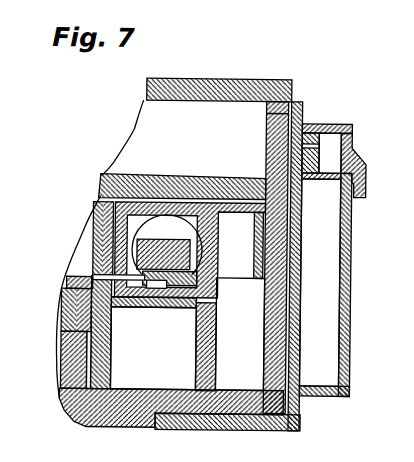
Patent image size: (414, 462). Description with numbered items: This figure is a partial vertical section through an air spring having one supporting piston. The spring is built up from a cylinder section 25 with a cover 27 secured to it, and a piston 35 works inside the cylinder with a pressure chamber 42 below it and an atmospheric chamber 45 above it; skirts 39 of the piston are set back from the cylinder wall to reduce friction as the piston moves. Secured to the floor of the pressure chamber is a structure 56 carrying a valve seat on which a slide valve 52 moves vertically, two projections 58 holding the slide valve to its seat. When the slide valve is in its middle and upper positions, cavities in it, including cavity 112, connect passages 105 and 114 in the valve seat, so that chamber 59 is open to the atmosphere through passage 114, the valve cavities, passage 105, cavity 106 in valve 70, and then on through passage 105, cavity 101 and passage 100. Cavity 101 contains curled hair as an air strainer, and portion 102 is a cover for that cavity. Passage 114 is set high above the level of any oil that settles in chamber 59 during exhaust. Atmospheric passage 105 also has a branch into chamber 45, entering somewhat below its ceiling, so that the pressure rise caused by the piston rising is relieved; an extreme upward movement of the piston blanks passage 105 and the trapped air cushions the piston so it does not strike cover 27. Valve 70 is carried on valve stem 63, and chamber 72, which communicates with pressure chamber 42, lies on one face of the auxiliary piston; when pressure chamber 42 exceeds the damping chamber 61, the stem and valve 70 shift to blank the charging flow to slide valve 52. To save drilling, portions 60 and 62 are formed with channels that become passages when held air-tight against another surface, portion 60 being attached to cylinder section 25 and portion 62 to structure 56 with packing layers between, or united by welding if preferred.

The cover 27 is at (147, 88).
The atmospheric chamber 45 is at (131, 133).
The piston 35 is at (104, 181).
The structure 56 is at (100, 215).
The portion 62 is at (216, 214).
The skirts 39 is at (257, 227).
The chamber 72 is at (183, 235).
The valve stem 63 is at (188, 256).
The valve 70 is at (186, 266).
The cavity 106 is at (145, 272).
The passage 114 is at (100, 291).
The slide valve 52 is at (70, 311).
The projections 58 is at (60, 326).
The cavity 112 is at (85, 338).
The cylinder section 25 is at (68, 407).
The chamber 59 is at (128, 381).
The atmospheric passage 105 is at (149, 300).
The pressure chamber 42 is at (240, 383).
The portion 60 is at (347, 289).
The damping chamber 61 is at (332, 318).
The cover 102 is at (347, 120).
The cavity 101 is at (330, 153).
The passage 100 is at (354, 194).